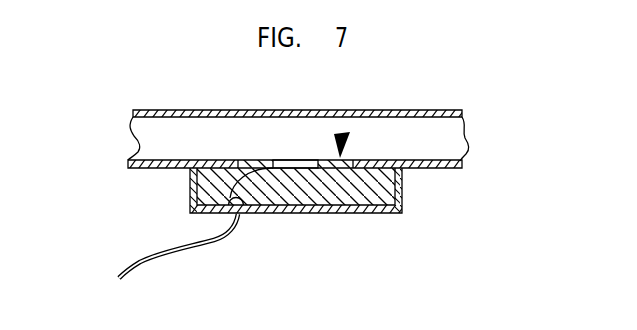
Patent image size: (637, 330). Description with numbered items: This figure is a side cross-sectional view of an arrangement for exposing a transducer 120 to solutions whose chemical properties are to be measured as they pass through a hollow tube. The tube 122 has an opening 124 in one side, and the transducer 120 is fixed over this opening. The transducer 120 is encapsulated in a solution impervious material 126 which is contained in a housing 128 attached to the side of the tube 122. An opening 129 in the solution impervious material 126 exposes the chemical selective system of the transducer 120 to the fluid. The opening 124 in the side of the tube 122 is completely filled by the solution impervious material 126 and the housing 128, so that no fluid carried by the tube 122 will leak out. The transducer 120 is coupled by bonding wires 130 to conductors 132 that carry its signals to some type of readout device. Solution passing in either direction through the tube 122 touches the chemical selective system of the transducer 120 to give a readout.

The transducer 120 is at (297, 166).
The tube 122 is at (397, 112).
The opening 124 is at (346, 134).
The solution impervious material 126 is at (208, 174).
The housing 128 is at (402, 190).
The opening 129 is at (291, 154).
The bonding wires 130 is at (228, 196).
The conductors 132 is at (173, 250).